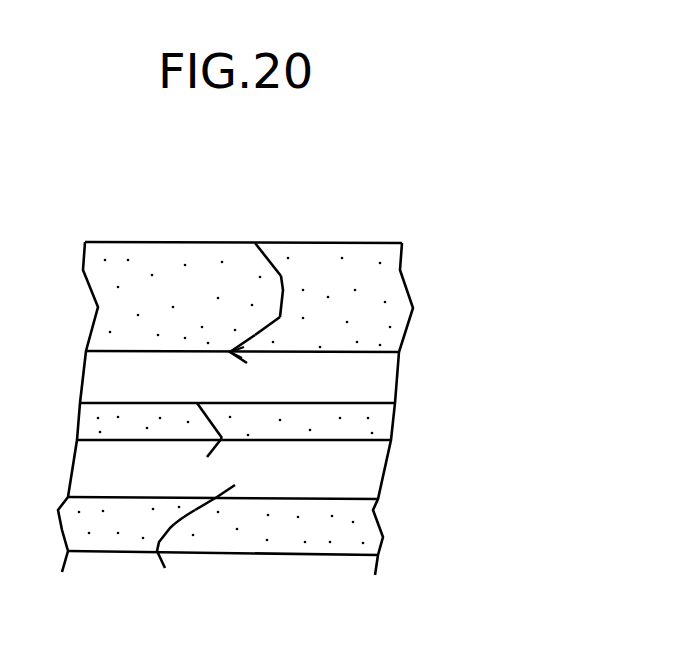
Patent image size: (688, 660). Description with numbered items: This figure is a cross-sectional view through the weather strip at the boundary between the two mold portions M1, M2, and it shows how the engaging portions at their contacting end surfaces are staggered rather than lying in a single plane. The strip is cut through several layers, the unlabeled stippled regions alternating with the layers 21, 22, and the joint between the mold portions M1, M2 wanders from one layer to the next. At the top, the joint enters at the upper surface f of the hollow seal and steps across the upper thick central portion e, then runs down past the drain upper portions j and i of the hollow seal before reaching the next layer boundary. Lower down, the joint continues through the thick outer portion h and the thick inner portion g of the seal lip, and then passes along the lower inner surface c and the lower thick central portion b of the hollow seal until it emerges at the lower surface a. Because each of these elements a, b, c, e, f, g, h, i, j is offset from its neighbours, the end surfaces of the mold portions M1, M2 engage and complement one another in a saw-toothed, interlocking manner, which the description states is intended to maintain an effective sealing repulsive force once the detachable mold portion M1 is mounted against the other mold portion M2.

The first layer 21 is at (362, 380).
The second layer 22 is at (363, 467).
The lower surface a is at (165, 577).
The lower thick central portion b is at (163, 525).
The lower inner surface c is at (232, 488).
The upper thick central portion e is at (281, 277).
The upper surface f is at (255, 243).
The thick inner portion g is at (206, 460).
The thick outer portion h is at (197, 403).
The drain upper portion i is at (246, 357).
The drain upper portion j is at (280, 318).
The mold portion M1 is at (128, 552).
The mold portion M2 is at (295, 555).